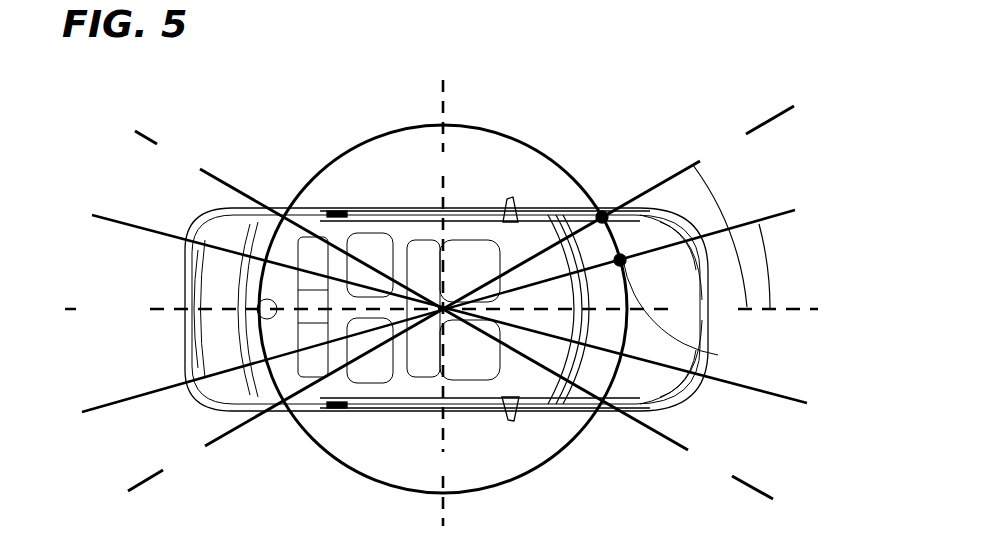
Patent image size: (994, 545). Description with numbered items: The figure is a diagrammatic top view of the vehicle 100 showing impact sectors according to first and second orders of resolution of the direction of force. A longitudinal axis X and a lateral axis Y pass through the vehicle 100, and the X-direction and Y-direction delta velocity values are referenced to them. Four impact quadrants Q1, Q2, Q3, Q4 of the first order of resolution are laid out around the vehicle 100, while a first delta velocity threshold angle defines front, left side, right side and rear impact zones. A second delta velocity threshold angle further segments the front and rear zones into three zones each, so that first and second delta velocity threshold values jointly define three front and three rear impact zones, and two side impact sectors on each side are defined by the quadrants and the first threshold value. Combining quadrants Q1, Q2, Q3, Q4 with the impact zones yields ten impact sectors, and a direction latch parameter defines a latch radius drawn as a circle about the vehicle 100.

The vehicle 100 is at (333, 108).
The X-direction X is at (455, 308).
The Y-direction Y is at (440, 287).
The first impact quadrant Q1 is at (618, 207).
The second impact quadrant Q2 is at (289, 220).
The third impact quadrant Q3 is at (285, 400).
The fourth impact quadrant Q4 is at (608, 404).